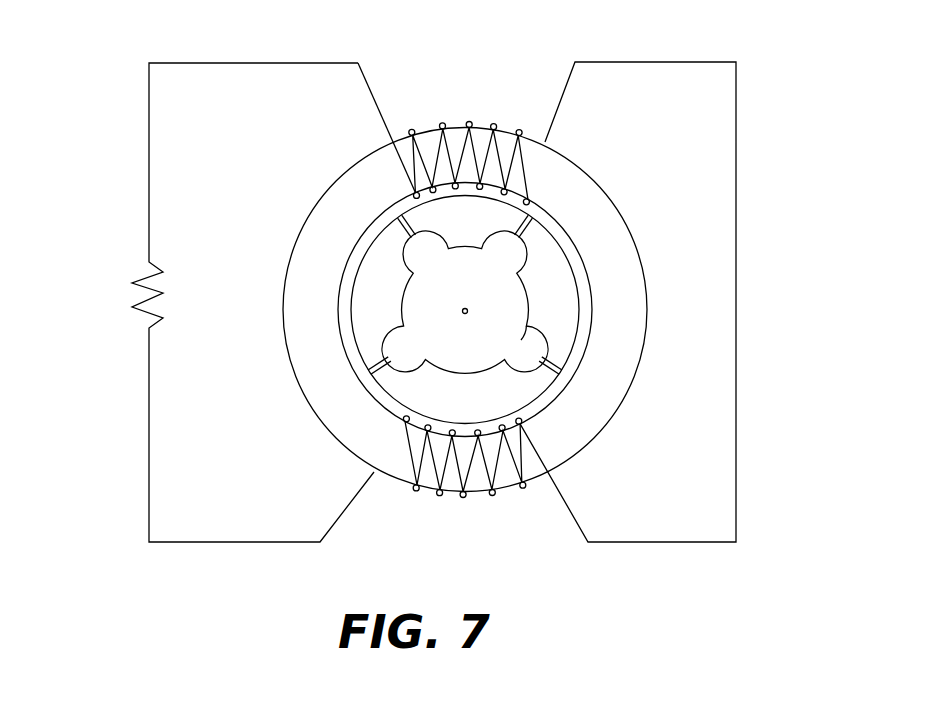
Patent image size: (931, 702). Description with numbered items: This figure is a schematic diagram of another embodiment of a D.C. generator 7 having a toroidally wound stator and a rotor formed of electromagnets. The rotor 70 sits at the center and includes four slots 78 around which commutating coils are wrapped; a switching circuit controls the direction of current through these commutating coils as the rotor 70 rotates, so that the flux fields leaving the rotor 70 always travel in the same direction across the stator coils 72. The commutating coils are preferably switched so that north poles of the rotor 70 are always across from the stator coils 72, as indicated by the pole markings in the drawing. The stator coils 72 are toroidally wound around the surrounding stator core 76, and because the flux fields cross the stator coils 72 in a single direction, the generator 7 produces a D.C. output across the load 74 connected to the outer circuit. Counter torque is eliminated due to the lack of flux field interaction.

The D.C. generator 7 is at (287, 187).
The rotor 70 is at (558, 270).
The stator coils 72 is at (460, 108).
The load 74 is at (130, 293).
The stator core 76 is at (587, 420).
The slots 78 is at (530, 322).